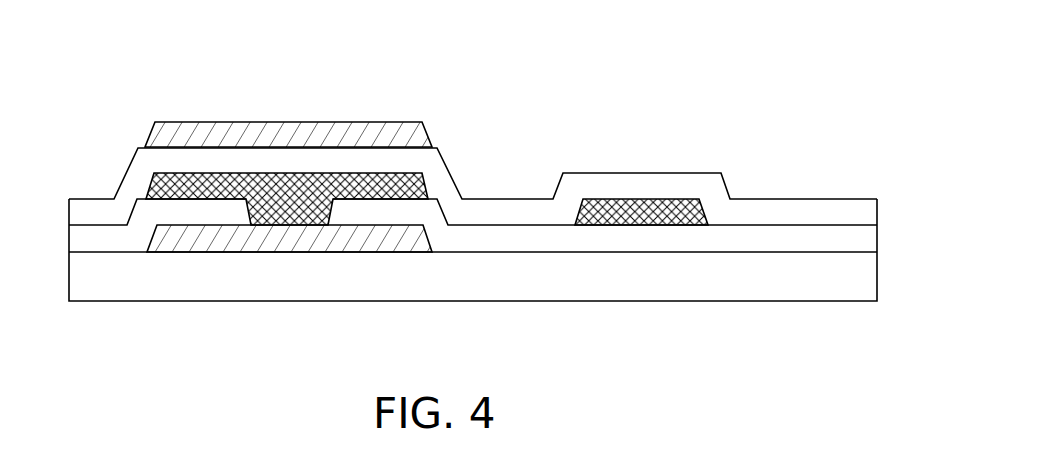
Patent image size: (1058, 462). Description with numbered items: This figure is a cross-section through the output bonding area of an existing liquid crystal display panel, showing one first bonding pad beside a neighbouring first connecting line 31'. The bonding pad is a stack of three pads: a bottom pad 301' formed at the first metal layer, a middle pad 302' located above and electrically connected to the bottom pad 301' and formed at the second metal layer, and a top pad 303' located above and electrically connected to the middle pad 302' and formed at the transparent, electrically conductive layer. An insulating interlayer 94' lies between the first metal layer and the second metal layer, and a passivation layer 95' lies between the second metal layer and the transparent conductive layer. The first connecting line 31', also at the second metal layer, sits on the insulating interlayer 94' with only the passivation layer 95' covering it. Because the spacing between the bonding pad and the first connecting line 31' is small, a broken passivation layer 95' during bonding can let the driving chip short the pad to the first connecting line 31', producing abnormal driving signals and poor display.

The bottom pad 301' is at (237, 195).
The middle pad 302' is at (287, 154).
The top pad 303' is at (288, 89).
The first connecting line 31' is at (633, 167).
The insulating interlayer 94' is at (515, 221).
The passivation layer 95' is at (503, 178).